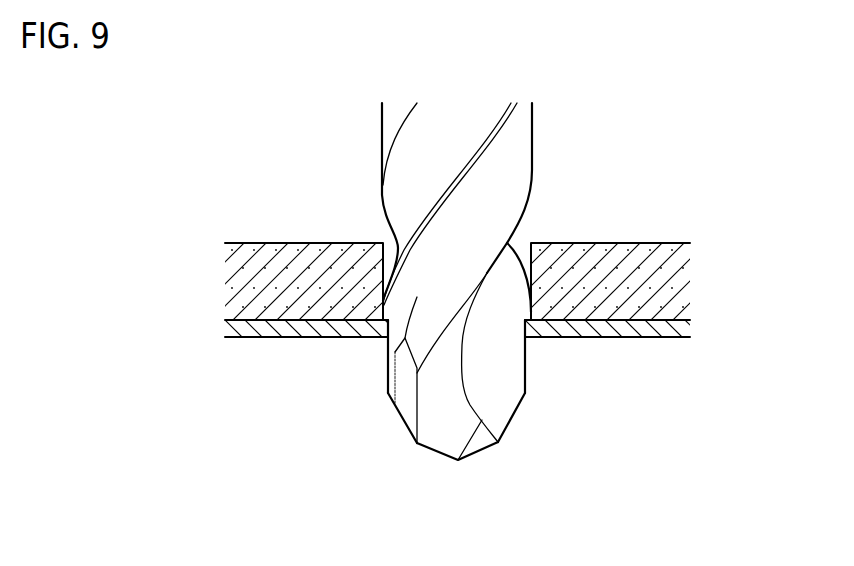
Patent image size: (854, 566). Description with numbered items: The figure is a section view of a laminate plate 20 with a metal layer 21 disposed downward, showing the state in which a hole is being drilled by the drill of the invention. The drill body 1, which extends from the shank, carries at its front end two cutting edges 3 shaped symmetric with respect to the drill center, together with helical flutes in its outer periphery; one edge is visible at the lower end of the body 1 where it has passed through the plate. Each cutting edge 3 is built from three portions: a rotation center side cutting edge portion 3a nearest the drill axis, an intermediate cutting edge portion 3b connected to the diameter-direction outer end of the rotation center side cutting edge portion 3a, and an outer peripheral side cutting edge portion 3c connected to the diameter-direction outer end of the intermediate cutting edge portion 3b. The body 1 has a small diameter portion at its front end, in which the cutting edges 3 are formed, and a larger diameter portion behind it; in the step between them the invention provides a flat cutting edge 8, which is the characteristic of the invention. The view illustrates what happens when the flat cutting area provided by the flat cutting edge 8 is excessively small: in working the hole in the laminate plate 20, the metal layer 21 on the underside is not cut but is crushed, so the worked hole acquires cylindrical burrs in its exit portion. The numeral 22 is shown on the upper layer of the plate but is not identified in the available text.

The body 1 is at (511, 334).
The cutting edge 3 is at (458, 461).
The rotation center side cutting edge portion 3a is at (477, 455).
The intermediate cutting edge portion 3b is at (510, 428).
The outer peripheral side cutting edge portion 3c is at (527, 402).
The flat cutting edge 8 is at (368, 337).
The laminate plate 20 is at (478, 273).
The metal layer 21 is at (658, 330).
The insulating base material 22 is at (667, 290).